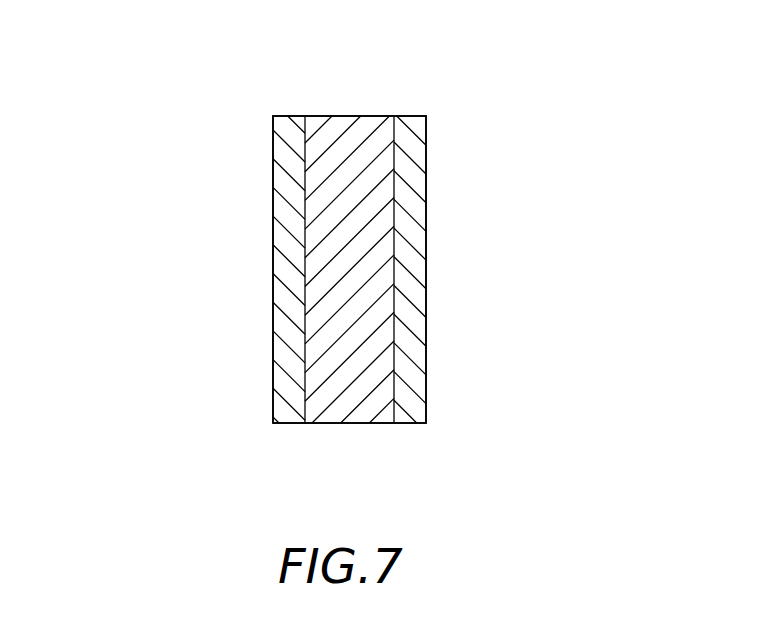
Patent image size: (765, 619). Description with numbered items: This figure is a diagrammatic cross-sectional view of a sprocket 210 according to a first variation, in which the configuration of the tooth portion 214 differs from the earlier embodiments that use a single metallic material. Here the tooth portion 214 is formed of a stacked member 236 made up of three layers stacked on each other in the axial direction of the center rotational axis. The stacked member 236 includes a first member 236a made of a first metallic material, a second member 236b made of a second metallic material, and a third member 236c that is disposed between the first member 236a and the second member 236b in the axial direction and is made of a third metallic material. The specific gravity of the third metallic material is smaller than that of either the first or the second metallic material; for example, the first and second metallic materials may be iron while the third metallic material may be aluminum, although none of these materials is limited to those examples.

The sprocket 210 is at (218, 120).
The tooth portion 214 is at (485, 150).
The stacked member 236 is at (481, 269).
The first member 236a is at (426, 209).
The second member 236b is at (305, 260).
The third member 236c is at (426, 297).